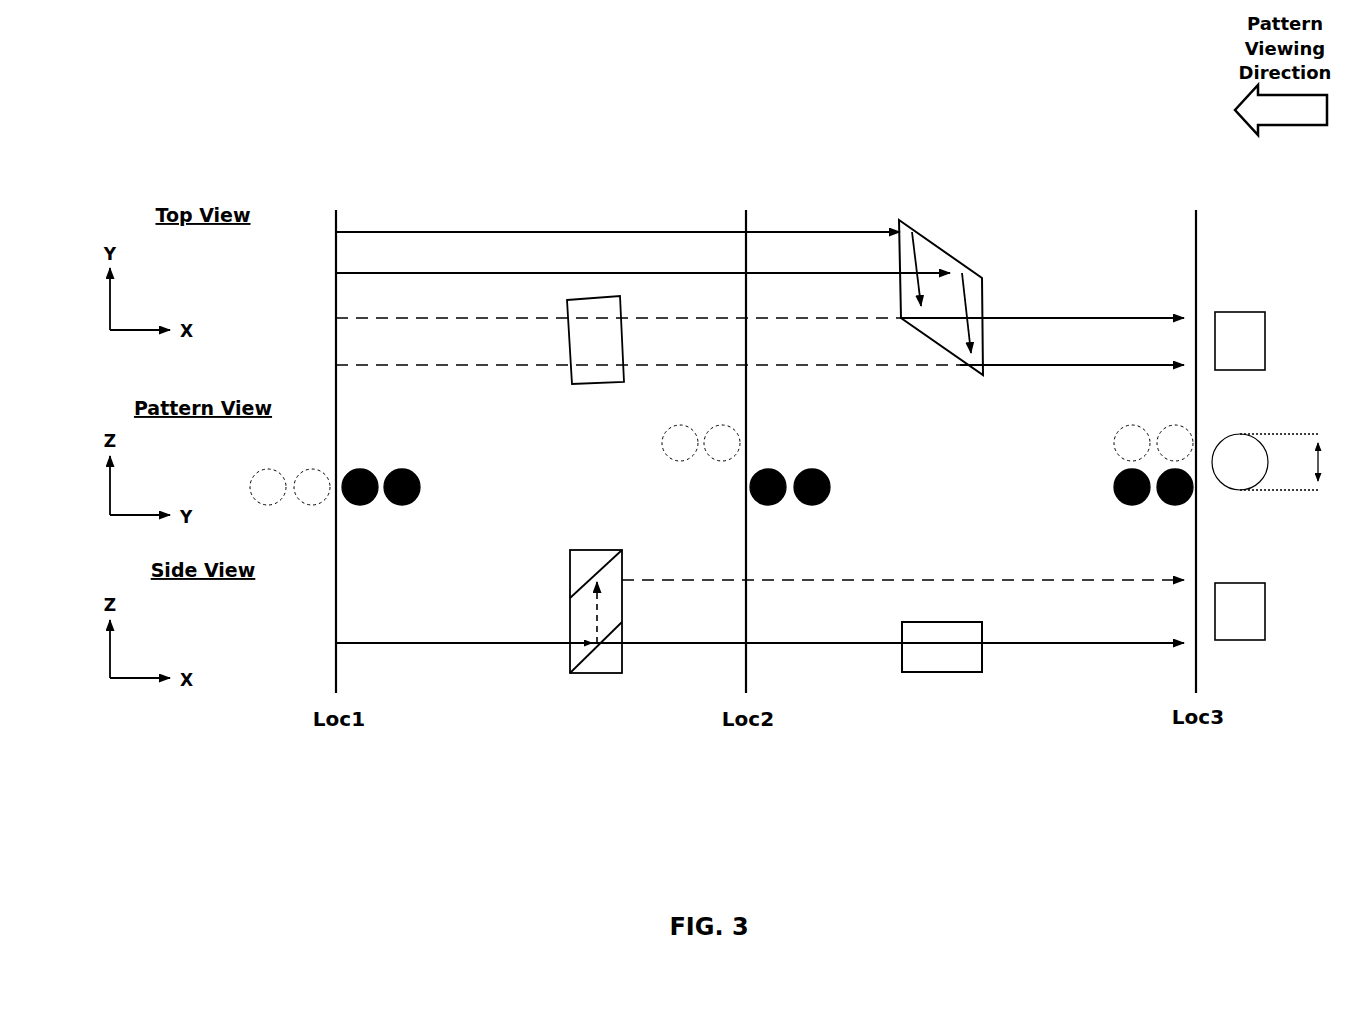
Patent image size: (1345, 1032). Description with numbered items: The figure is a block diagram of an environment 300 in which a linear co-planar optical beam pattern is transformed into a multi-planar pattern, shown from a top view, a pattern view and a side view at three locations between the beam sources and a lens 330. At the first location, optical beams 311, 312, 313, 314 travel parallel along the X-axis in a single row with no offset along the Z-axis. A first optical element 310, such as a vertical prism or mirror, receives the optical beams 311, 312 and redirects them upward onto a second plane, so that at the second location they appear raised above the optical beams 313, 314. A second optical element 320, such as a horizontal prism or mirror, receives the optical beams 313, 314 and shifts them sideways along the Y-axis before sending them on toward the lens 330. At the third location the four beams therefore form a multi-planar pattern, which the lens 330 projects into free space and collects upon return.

The environment 300 is at (215, 88).
The optical element 310 is at (572, 384).
The optical beam 311 is at (410, 367).
The optical beam 312 is at (412, 318).
The optical beam 313 is at (522, 276).
The optical beam 314 is at (520, 232).
The optical element 320 is at (983, 296).
The lens 330 is at (1240, 312).